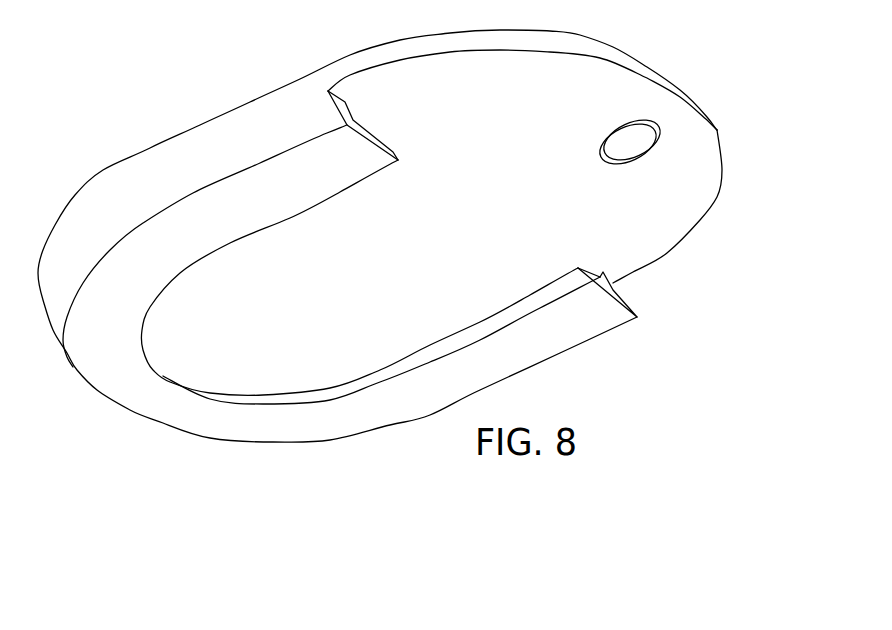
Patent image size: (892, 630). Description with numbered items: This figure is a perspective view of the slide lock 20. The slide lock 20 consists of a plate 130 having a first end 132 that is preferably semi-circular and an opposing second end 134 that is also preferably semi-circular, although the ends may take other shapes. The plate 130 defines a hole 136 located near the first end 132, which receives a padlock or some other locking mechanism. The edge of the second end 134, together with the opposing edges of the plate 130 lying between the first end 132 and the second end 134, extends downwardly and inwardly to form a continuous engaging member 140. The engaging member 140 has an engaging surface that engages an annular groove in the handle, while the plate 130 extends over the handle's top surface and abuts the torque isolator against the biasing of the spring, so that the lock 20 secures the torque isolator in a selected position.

The slide lock 20 is at (196, 59).
The plate 130 is at (367, 308).
The first end 132 is at (643, 217).
The second end 134 is at (178, 357).
The hole 136 is at (633, 140).
The engaging member 140 is at (513, 357).